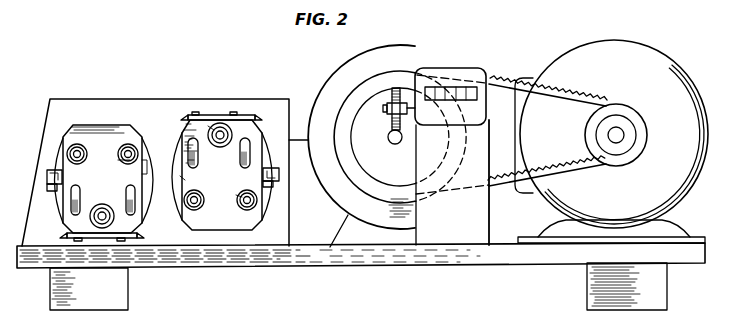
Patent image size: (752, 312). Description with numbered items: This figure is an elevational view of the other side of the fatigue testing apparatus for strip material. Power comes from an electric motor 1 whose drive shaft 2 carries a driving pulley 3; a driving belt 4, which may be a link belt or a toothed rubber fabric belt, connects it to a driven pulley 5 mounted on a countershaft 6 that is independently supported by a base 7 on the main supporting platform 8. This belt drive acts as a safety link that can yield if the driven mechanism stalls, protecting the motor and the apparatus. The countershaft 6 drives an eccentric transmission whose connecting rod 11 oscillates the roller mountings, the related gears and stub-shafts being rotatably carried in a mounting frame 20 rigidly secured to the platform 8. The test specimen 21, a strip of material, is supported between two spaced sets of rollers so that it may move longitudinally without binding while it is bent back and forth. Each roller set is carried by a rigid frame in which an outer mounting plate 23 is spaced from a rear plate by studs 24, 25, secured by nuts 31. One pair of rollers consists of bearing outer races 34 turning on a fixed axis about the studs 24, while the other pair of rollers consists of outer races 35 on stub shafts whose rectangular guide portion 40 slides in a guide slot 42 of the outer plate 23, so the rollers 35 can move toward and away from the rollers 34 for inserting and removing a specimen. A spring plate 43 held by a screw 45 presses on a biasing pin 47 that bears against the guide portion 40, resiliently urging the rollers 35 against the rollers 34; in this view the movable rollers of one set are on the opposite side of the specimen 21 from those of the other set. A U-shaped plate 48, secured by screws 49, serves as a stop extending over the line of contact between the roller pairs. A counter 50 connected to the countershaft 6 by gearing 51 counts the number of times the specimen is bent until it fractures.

The electric motor 1 is at (689, 92).
The drive shaft 2 is at (620, 134).
The driving pulley 3 is at (632, 118).
The driving belt 4 is at (569, 96).
The driven pulley 5 is at (350, 108).
The countershaft 6 is at (388, 138).
The base 7 is at (341, 231).
The main supporting platform 8 is at (497, 258).
The connecting rod 11 is at (292, 140).
The mounting frame 20 is at (72, 99).
The test specimen 21 is at (143, 167).
The outer mounting plate 23 is at (107, 124).
The stud 24 is at (123, 158).
The stud 25 is at (212, 128).
The nut 31 is at (74, 146).
The outer race 34 is at (56, 143).
The outer race 35 is at (176, 146).
The guide portion 40 is at (126, 200).
The guide slot 42 is at (125, 188).
The spring plate 43 is at (103, 238).
The screw 45 is at (84, 239).
The biasing pin 47 is at (64, 236).
The U-shaped plate 48 is at (47, 173).
The screw 49 is at (47, 187).
The counter 50 is at (479, 72).
The gearing 51 is at (396, 87).